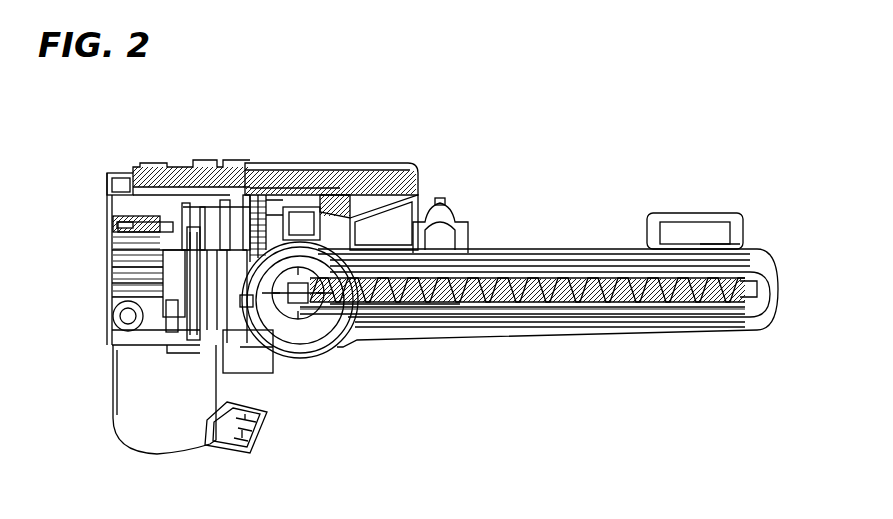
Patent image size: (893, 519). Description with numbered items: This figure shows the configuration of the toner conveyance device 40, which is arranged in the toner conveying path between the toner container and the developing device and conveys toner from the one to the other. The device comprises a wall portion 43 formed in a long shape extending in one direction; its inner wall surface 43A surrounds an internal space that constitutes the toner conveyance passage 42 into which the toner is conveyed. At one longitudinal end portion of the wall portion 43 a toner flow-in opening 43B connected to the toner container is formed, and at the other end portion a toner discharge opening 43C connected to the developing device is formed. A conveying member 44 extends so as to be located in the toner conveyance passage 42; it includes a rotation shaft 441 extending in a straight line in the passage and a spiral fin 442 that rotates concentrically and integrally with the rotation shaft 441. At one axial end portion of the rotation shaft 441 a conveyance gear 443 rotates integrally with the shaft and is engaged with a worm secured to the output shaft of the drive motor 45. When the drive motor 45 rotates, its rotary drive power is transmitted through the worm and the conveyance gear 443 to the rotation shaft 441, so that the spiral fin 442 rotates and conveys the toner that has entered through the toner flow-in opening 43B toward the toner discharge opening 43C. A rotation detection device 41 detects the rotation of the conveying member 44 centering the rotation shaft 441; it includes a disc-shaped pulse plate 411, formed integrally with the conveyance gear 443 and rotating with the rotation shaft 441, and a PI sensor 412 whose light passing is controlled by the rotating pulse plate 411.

The toner conveyance device 40 is at (404, 146).
The rotation detection device 41 is at (166, 243).
The pulse plate 411 is at (203, 342).
The Photo Interrupter Sensor (PI sensor) 412 is at (172, 224).
The toner conveyance passage 42 is at (530, 300).
The wall portion 43 is at (690, 323).
The inner wall surface 43A is at (615, 307).
The toner flow-in opening 43B is at (327, 322).
The toner discharge opening 43C is at (683, 228).
The conveying member 44 is at (394, 355).
The rotation shaft 441 is at (403, 292).
The spiral fin 442 is at (437, 304).
The conveyance gear 443 is at (173, 318).
The drive motor 45 is at (162, 437).